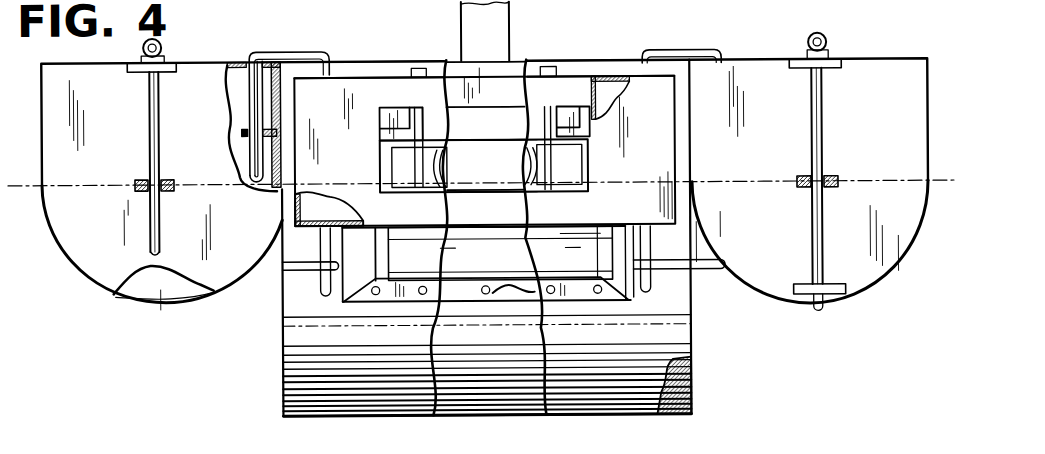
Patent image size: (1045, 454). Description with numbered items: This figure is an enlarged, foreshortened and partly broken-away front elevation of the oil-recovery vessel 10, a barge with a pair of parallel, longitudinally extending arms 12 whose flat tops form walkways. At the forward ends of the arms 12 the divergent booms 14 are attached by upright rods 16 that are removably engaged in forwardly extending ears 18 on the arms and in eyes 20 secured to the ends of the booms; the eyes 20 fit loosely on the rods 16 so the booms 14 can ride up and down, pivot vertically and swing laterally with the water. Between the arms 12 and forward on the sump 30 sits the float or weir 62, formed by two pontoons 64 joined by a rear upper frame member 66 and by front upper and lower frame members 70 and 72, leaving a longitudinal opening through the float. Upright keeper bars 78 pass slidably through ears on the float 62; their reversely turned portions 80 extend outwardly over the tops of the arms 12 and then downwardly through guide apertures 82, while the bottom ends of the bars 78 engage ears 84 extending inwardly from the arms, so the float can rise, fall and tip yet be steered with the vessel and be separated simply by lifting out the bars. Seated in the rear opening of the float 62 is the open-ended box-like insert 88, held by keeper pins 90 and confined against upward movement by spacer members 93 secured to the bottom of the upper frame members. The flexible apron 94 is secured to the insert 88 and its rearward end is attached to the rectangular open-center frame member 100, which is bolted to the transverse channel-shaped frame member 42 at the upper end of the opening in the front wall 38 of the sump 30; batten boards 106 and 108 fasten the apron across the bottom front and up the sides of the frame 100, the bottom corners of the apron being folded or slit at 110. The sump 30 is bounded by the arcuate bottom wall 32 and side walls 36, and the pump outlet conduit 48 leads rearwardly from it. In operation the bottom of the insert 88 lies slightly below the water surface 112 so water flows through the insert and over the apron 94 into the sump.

The vessel 10 is at (473, 393).
The arms 12 is at (57, 81).
The booms 14 is at (72, 452).
The upright rods 16 is at (152, 253).
The ears 18 is at (167, 70).
The eyes 20 is at (138, 191).
The sump 30 is at (317, 372).
The arcuate bottom wall 32 is at (677, 416).
The side walls 36 is at (688, 389).
The front wall 38 is at (665, 247).
The transverse channel-shaped frame member 42 is at (368, 67).
The outlet conduit 48 is at (494, 21).
The float 62 is at (352, 83).
The pontoons 64 is at (337, 96).
The rear upper frame member 66 is at (575, 79).
The front upper frame member 70 is at (508, 86).
The front lower frame member 72 is at (494, 220).
The keeper bars 78 is at (322, 73).
The reversely turned portions 80 is at (282, 62).
The guide apertures 82 is at (247, 131).
The ears 84 is at (276, 272).
The insert 88 is at (480, 191).
The keeper pins 90 is at (423, 70).
The spacer members 93 is at (395, 111).
The flexible apron 94 is at (533, 158).
The rectangular open center frame member 100 is at (507, 299).
The batten boards 106 is at (408, 295).
The batten boards 108 is at (345, 297).
The folded or slit corners 110 is at (365, 299).
The water surface 112 is at (30, 188).